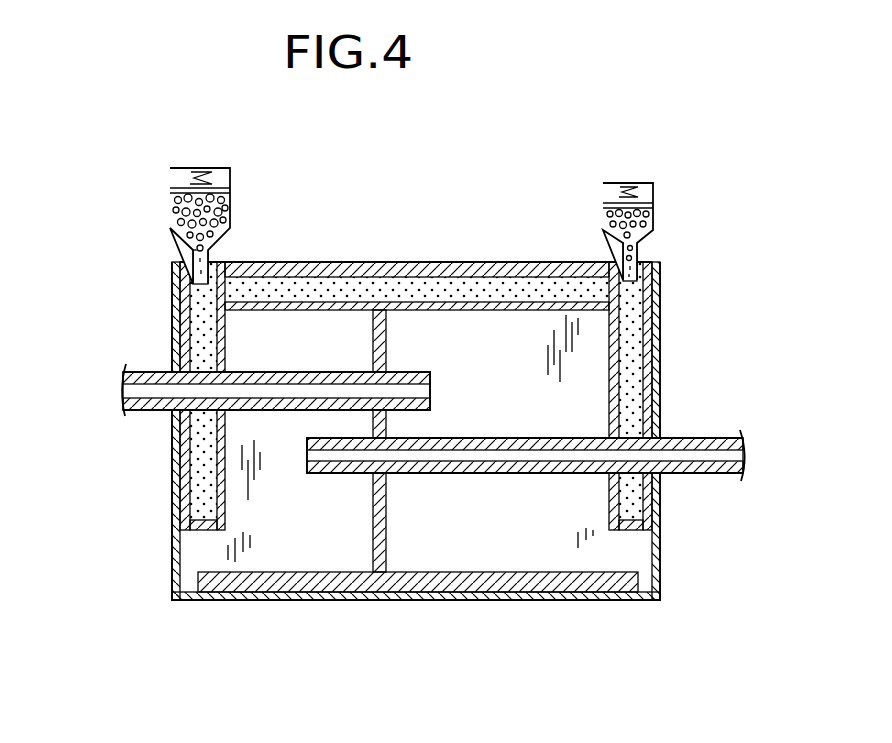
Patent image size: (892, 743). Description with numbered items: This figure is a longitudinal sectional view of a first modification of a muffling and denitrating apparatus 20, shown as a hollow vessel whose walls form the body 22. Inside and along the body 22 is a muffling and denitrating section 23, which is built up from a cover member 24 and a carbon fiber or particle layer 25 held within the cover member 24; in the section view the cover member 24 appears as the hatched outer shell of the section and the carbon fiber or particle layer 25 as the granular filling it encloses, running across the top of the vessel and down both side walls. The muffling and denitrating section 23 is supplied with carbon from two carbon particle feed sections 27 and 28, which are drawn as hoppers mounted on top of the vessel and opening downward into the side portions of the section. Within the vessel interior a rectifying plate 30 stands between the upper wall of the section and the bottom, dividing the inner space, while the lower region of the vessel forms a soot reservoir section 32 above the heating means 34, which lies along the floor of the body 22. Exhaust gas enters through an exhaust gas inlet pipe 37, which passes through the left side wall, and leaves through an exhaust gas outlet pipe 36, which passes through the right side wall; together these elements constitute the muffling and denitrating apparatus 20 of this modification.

The muffling and denitrating apparatus 20 is at (166, 302).
The body 22 is at (177, 562).
The muffling and denitrating section 23 is at (76, 452).
The cover member 24 is at (185, 450).
The carbon fiber or particle layer 25 is at (197, 497).
The carbon particle feed section 27 is at (170, 210).
The carbon particle feed section 28 is at (653, 218).
The rectifying plate 30 is at (391, 543).
The soot reservoir section 32 is at (642, 555).
The heating means 34 is at (543, 583).
The exhaust gas outlet pipe 36 is at (711, 438).
The exhaust gas inlet pipe 37 is at (124, 368).